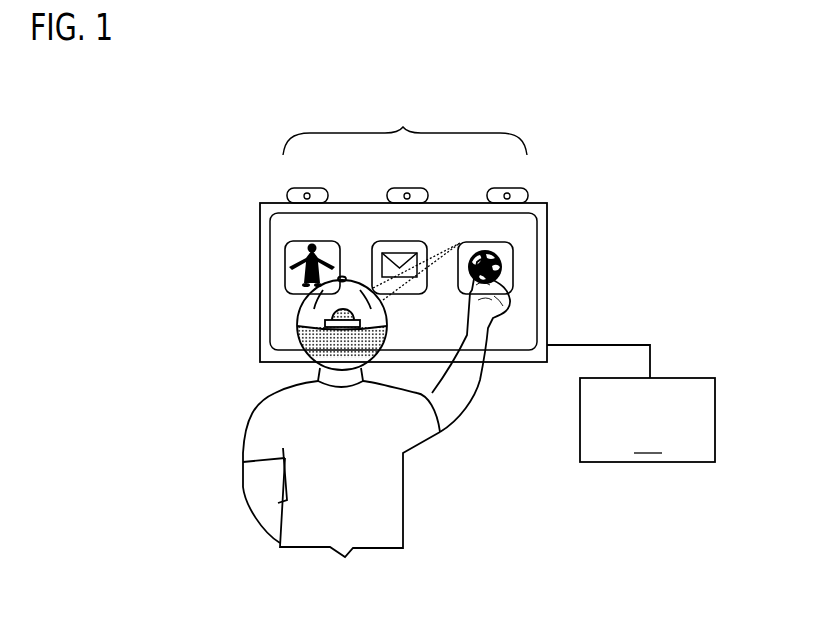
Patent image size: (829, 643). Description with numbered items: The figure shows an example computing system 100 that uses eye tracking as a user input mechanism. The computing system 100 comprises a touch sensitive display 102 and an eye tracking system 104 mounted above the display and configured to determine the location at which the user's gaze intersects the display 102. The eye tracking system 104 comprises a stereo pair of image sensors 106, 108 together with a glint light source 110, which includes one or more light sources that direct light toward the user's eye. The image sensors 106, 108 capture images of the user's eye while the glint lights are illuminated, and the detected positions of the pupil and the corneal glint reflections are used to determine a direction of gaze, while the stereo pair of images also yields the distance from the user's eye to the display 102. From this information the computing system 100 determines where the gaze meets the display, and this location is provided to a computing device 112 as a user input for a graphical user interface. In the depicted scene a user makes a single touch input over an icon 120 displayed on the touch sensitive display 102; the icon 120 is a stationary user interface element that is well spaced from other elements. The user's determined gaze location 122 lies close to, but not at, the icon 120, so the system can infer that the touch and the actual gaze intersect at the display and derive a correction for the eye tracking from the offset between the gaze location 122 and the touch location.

The computing system 100 is at (571, 121).
The touch sensitive display 102 is at (527, 240).
The eye tracking system 104 is at (407, 152).
The image sensor 106 is at (308, 188).
The image sensor 108 is at (507, 188).
The glint light source 110 is at (407, 188).
The computing device 112 is at (631, 403).
The icon 120 is at (511, 279).
The gaze location 122 is at (458, 244).